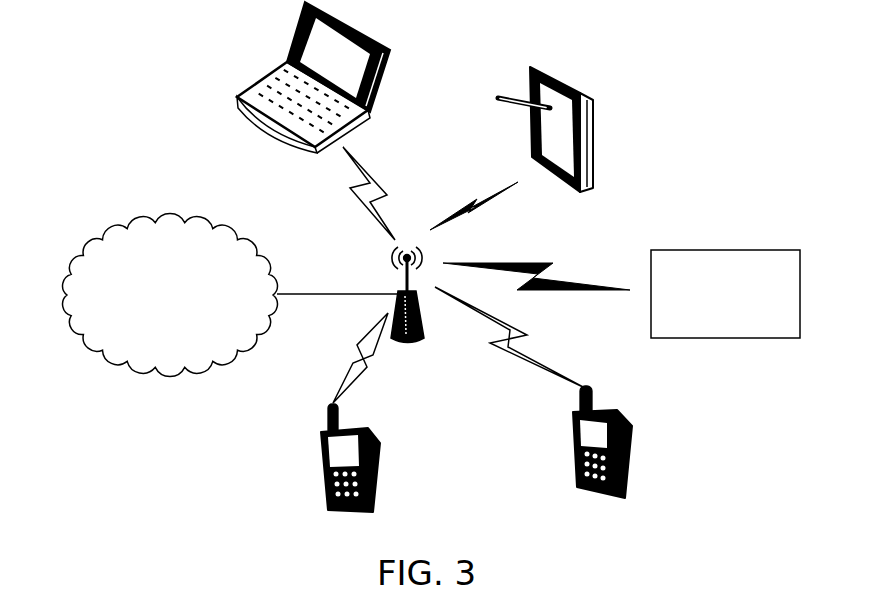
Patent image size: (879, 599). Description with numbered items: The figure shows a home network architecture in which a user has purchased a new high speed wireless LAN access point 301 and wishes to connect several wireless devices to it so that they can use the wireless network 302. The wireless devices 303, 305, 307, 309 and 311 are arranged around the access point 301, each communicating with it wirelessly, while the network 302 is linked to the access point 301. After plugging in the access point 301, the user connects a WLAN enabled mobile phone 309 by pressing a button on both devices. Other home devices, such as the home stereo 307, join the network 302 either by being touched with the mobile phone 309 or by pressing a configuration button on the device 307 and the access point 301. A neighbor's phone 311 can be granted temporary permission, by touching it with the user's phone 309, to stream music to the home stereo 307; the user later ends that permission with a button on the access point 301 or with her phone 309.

The wireless LAN access point 301 is at (418, 340).
The wireless network 302 is at (170, 368).
The wireless device 303 is at (237, 93).
The wireless device 305 is at (595, 123).
The home stereo 307 is at (727, 338).
The mobile phone 309 is at (577, 485).
The phone 311 is at (322, 462).